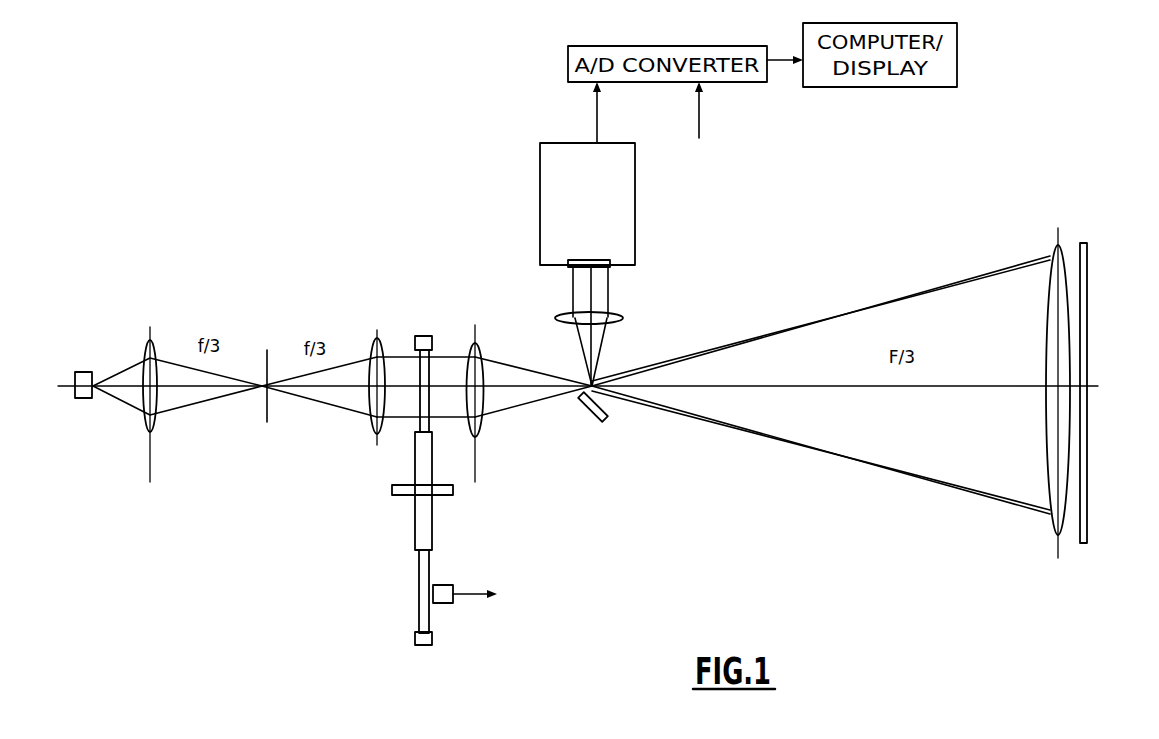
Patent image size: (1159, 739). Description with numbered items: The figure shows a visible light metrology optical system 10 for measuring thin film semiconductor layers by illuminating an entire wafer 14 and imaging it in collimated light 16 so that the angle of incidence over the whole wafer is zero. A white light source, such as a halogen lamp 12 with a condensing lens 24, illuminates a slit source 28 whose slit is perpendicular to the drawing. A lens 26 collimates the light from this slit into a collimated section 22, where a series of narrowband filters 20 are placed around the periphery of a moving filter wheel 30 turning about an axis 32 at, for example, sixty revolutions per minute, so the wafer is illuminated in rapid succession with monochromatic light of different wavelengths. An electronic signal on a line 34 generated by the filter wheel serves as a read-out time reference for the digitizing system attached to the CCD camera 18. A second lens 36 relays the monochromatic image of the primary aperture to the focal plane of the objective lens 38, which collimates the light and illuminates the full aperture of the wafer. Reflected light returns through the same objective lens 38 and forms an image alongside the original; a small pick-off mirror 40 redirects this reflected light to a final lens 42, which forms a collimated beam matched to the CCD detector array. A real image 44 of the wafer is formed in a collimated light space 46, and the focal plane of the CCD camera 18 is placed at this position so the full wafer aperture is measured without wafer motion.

The optical system 10 is at (270, 197).
The halogen lamp 12 is at (85, 372).
The wafer 14 is at (1088, 308).
The collimated light 16 is at (1074, 228).
The CCD camera 18 is at (636, 232).
The narrowband filters 20 is at (425, 318).
The collimated section 22 is at (400, 432).
The condensing lens 24 is at (145, 422).
The lens 26 is at (372, 428).
The slit source 28 is at (267, 350).
The filter wheel 30 is at (433, 527).
The axis 32 is at (405, 496).
The line 34 is at (700, 127).
The second lens 36 is at (480, 425).
The objective lens 38 is at (1046, 320).
The pick-off mirror 40 is at (583, 400).
The final lens 42 is at (618, 316).
The real image 44 is at (620, 268).
The collimated light space 46 is at (556, 298).